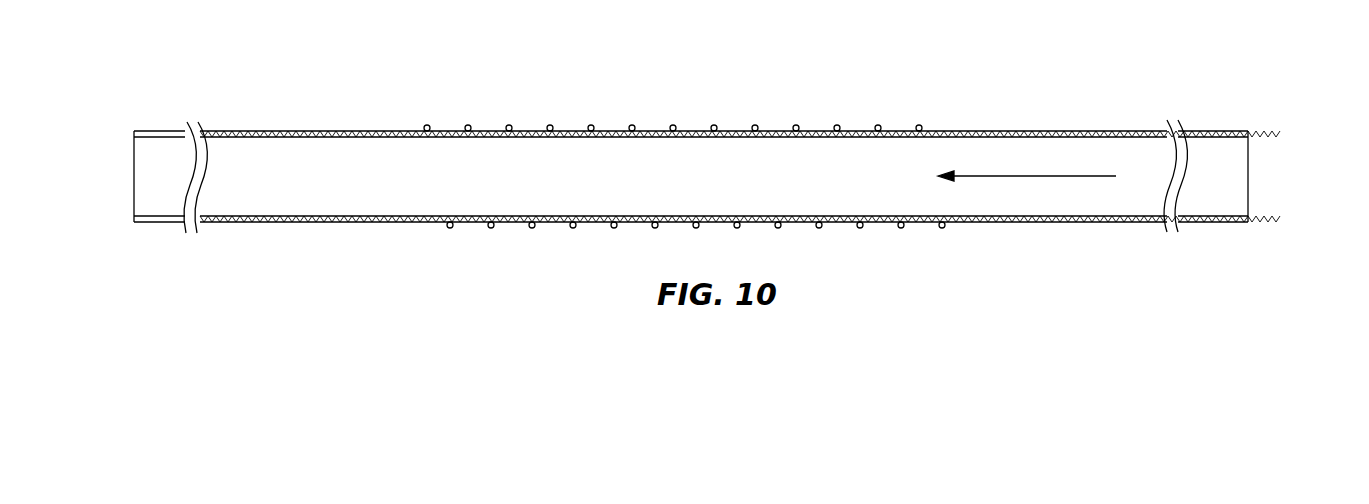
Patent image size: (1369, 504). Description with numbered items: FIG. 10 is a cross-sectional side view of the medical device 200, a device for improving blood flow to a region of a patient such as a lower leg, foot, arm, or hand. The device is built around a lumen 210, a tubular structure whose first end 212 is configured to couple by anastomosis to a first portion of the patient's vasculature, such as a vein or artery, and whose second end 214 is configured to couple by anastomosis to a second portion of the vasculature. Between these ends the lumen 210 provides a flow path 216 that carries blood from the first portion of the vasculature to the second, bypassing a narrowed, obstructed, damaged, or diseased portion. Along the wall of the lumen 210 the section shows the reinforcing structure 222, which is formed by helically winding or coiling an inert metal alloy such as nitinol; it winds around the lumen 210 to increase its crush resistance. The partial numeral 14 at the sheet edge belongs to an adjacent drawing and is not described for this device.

The medical device 200 is at (888, 68).
The lumen 210 is at (1035, 130).
The first end 212 is at (1248, 178).
The second end 214 is at (134, 152).
The flow path 216 is at (1000, 176).
The reinforcing structure 222 is at (714, 125).
The partial reference 14 is at (28, 0).